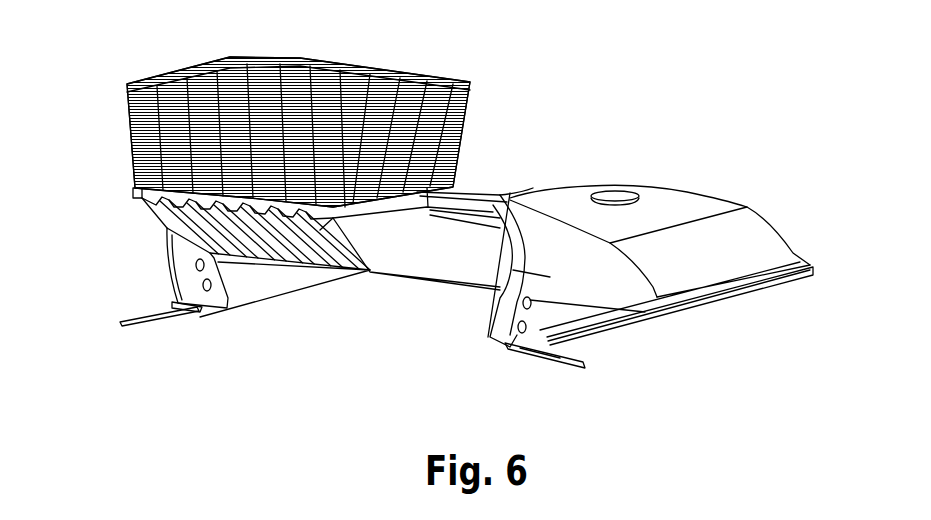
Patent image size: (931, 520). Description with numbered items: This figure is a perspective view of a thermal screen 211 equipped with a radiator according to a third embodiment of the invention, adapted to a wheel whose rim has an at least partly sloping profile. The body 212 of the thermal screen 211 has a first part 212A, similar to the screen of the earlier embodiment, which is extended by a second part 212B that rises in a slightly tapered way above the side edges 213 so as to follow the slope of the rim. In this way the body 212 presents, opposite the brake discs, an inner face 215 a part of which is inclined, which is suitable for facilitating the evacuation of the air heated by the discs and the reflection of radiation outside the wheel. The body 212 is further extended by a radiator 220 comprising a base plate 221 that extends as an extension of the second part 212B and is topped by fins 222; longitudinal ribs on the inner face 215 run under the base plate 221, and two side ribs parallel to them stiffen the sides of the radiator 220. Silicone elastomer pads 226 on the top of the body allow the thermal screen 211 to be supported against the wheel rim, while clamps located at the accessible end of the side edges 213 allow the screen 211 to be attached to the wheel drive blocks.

The thermal screen 211 is at (772, 186).
The body 212 is at (690, 203).
The first part 212A is at (560, 200).
The second part 212B is at (548, 287).
The side edges 213 is at (730, 287).
The inner face 215 is at (413, 239).
The radiator 220 is at (108, 151).
The base plate 221 is at (138, 193).
The fins 222 is at (243, 32).
The silicone elastomer pads 226 is at (618, 192).